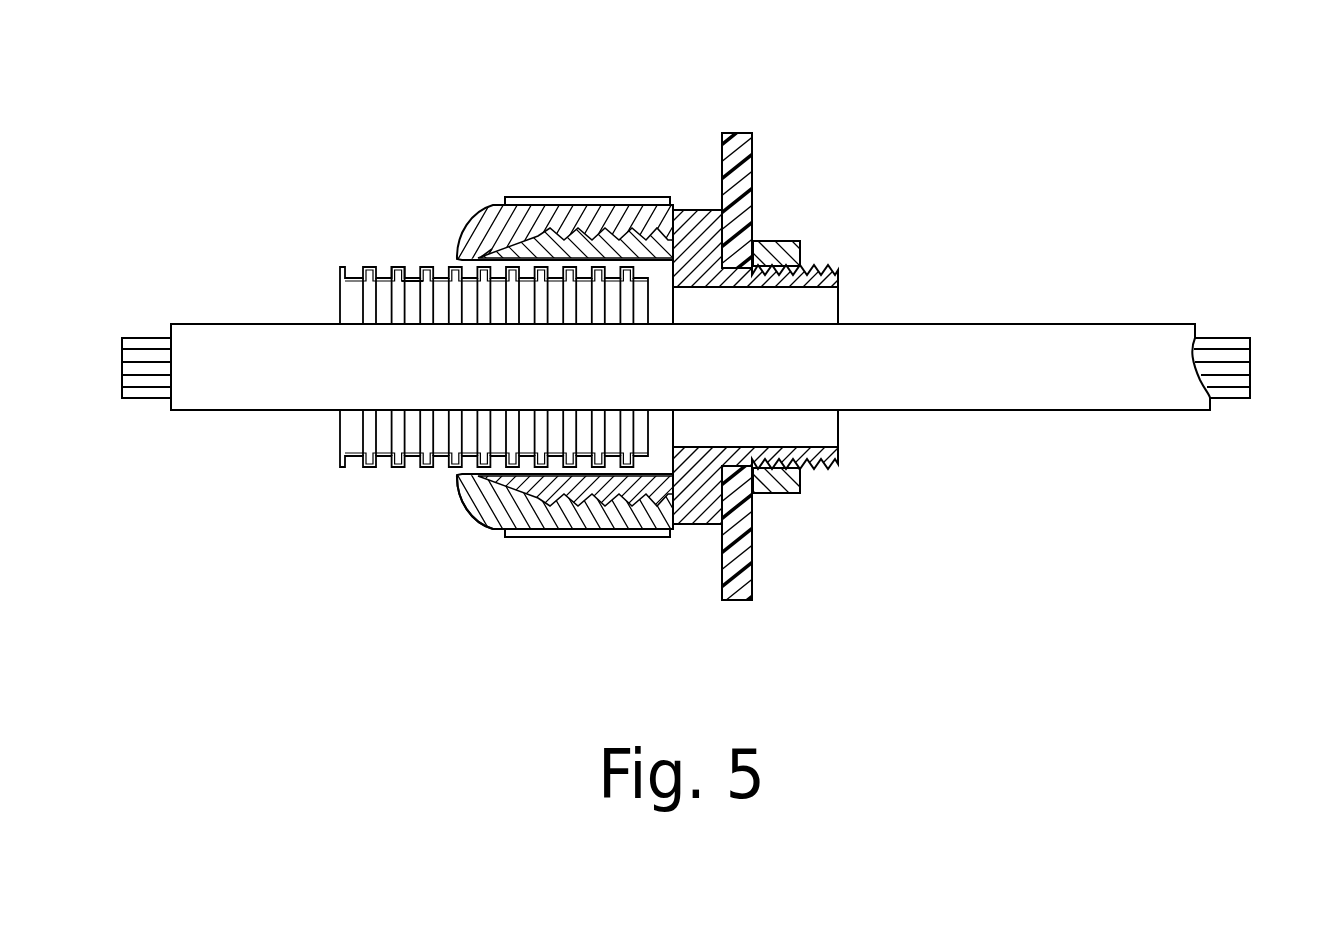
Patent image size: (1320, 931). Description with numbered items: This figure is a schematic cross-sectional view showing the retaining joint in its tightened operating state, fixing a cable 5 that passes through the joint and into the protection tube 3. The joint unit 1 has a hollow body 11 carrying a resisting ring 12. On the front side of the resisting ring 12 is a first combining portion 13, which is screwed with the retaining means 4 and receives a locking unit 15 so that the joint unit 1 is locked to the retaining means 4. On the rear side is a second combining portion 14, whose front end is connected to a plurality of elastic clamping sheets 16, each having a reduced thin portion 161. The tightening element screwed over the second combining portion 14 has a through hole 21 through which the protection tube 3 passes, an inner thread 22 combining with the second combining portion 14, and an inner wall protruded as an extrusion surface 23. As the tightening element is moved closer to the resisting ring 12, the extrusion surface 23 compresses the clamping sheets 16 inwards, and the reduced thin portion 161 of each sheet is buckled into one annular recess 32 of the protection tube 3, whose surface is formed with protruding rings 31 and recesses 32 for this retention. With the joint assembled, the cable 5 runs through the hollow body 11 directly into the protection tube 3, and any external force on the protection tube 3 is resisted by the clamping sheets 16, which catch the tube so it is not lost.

The joint unit 1 is at (783, 323).
The hollow body 11 is at (691, 178).
The resisting ring 12 is at (697, 211).
The first combining portion 13 is at (802, 250).
The second combining portion 14 is at (660, 503).
The locking unit 15 is at (780, 485).
The elastic clamping sheets 16 is at (490, 258).
The reduced thin portion 161 is at (491, 260).
The through hole 21 is at (617, 503).
The thread 22 is at (457, 473).
The extrusion surface 23 is at (502, 490).
The protection tube 3 is at (372, 257).
The protruding rings 31 is at (399, 266).
The recesses 32 is at (408, 270).
The retaining means 4 is at (741, 188).
The cable 5 is at (987, 324).